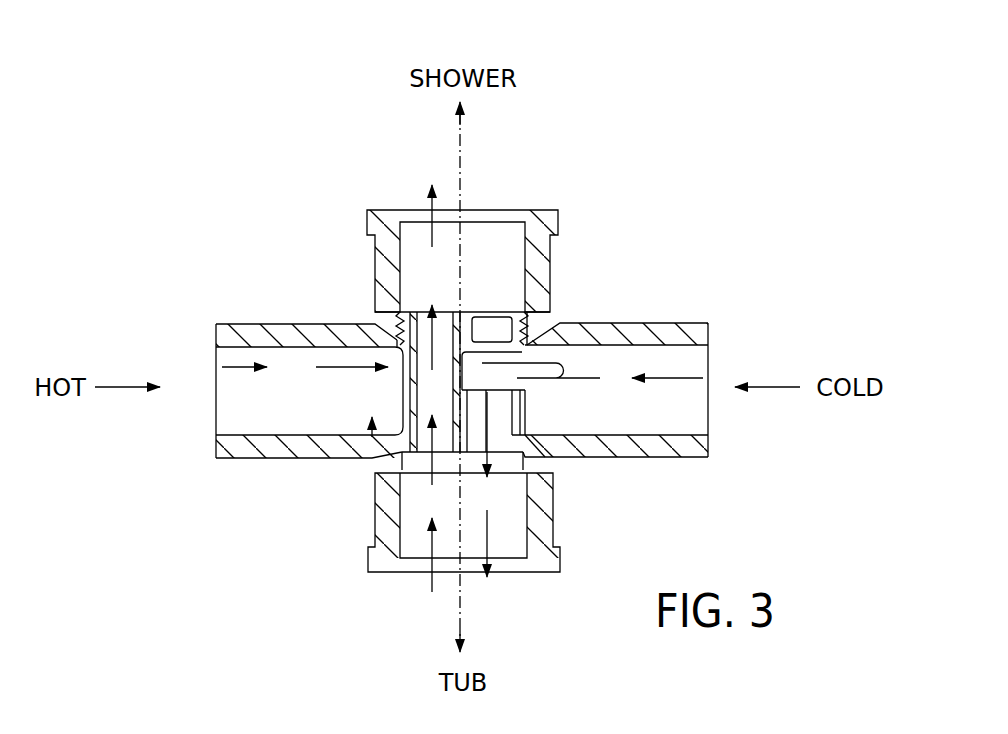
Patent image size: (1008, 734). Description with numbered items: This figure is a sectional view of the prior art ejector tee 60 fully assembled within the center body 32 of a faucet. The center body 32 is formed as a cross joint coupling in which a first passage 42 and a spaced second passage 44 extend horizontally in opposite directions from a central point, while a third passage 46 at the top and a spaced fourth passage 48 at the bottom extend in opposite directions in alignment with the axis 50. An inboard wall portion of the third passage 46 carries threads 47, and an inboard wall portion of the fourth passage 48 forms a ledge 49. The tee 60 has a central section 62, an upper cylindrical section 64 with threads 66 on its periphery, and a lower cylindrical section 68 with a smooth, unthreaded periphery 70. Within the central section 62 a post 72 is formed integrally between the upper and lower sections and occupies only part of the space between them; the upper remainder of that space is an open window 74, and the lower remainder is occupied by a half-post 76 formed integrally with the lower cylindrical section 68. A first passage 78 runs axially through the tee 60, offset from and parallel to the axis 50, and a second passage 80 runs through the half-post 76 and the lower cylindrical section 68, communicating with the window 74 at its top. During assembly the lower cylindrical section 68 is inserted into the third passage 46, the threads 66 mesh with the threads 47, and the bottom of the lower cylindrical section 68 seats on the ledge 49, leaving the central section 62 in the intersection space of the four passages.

The center body 32 is at (630, 253).
The first passage 42 is at (202, 348).
The second passage 44 is at (715, 343).
The third passage 46 is at (517, 213).
The threads 47 is at (555, 325).
The fourth passage 48 is at (513, 548).
The ledge 49 is at (430, 330).
The axis 50 is at (478, 182).
The tee 60 is at (380, 463).
The central section 62 is at (400, 393).
The upper cylindrical section 64 is at (537, 310).
The threads 66 is at (384, 328).
The lower cylindrical section 68 is at (550, 457).
The smooth periphery 70 is at (423, 312).
The post 72 is at (368, 440).
The window 74 is at (515, 350).
The half-post 76 is at (525, 420).
The first passage 78 is at (378, 333).
The second passage 80 is at (535, 447).